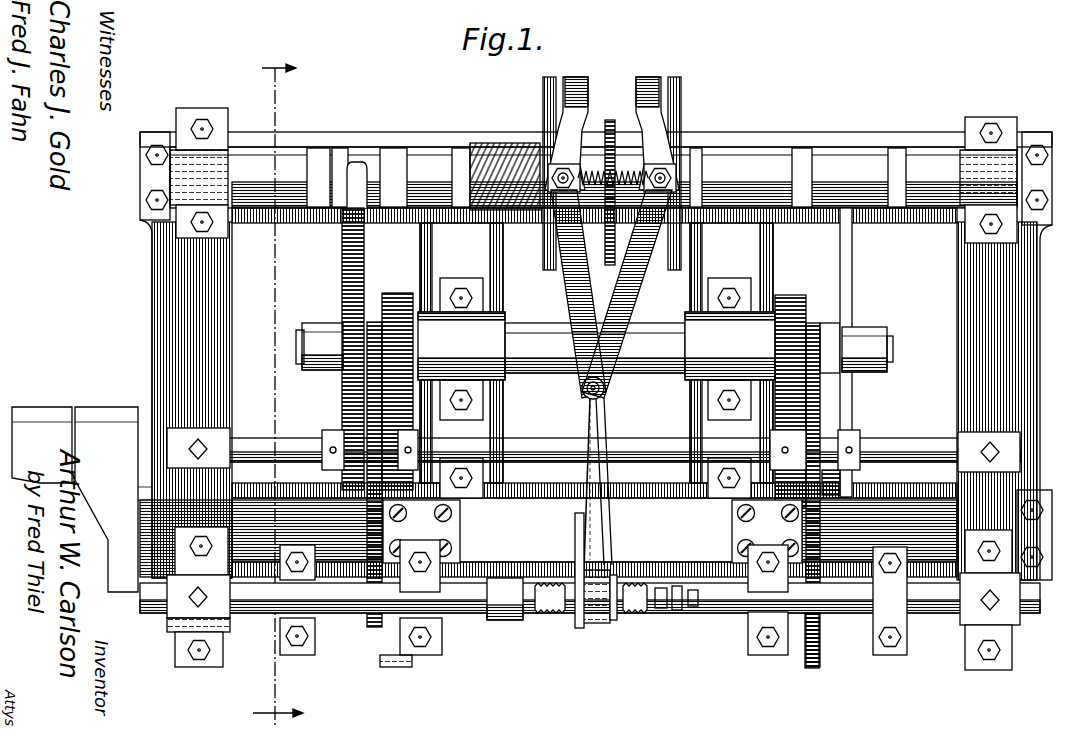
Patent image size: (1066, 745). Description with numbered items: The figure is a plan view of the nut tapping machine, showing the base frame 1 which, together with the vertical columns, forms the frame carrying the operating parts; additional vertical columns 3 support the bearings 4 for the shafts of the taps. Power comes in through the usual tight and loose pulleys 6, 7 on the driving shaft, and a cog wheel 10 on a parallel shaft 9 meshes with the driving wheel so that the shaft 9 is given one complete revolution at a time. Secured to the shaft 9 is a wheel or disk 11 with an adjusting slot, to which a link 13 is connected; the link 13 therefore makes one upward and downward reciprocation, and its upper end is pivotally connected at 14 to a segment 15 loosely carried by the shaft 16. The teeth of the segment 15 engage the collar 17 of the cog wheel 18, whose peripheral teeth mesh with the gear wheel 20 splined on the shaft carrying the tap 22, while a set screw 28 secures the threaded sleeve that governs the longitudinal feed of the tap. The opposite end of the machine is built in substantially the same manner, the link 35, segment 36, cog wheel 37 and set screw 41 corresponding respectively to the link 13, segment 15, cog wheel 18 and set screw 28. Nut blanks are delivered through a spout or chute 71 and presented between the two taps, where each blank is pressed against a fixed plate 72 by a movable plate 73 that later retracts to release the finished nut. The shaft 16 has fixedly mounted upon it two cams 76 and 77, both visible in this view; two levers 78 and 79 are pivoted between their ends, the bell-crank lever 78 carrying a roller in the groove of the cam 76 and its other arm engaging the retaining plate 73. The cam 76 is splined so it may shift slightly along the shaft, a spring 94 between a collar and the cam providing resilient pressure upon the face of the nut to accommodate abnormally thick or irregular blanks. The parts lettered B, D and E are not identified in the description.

The base frame 1 is at (770, 140).
The vertical column 3 is at (740, 530).
The bearing 4 is at (278, 392).
The tight pulley 6 is at (42, 445).
The loose pulley 7 is at (113, 499).
The shaft 9 is at (845, 292).
The cog wheel 10 is at (396, 298).
The wheel or disk 11 is at (335, 394).
The link 13 is at (320, 341).
The pivotal connection 14 is at (300, 355).
The segment 15 is at (345, 268).
The shaft 16 is at (427, 165).
The collar 17 is at (345, 437).
The cog wheel 18 is at (372, 478).
The gear wheel 20 is at (822, 630).
The tap 22 is at (540, 614).
The set screw 28 is at (198, 597).
The link 35 is at (880, 362).
The segment 36 is at (835, 388).
The cog wheel 37 is at (862, 497).
The set screw 41 is at (990, 600).
The spout or chute 71 is at (598, 625).
The fixed plate 72 is at (579, 630).
The plate 73 is at (617, 625).
The cam 76 is at (548, 100).
The cam 77 is at (675, 105).
The lever 78 is at (582, 300).
The lever 79 is at (622, 570).
The spring 94 is at (495, 150).
The lower shaft B is at (925, 613).
The gear D is at (850, 425).
The main shaft E is at (640, 445).